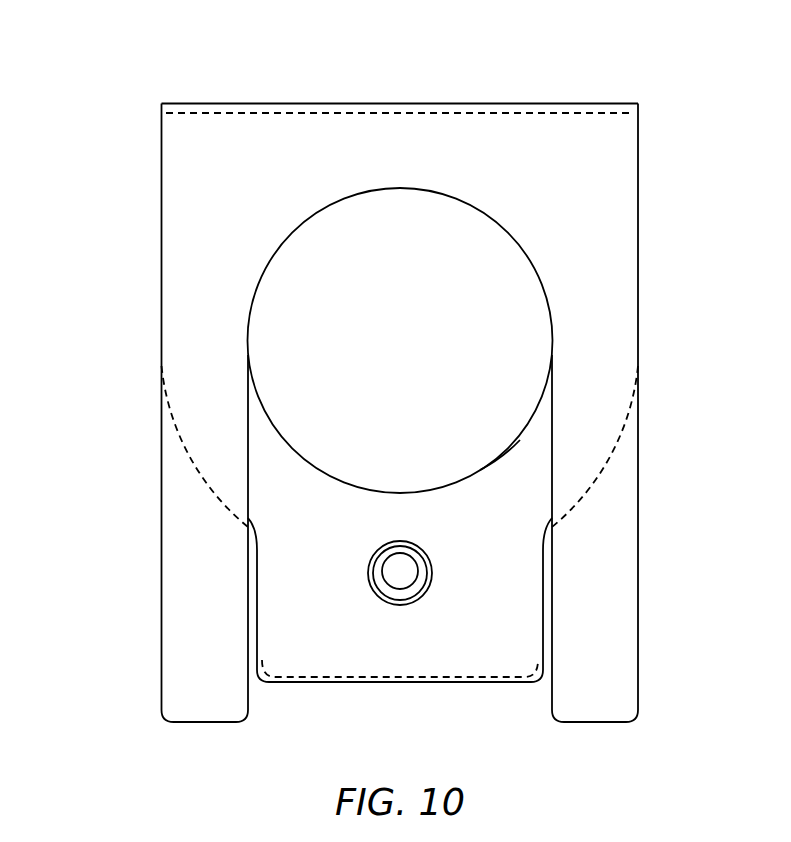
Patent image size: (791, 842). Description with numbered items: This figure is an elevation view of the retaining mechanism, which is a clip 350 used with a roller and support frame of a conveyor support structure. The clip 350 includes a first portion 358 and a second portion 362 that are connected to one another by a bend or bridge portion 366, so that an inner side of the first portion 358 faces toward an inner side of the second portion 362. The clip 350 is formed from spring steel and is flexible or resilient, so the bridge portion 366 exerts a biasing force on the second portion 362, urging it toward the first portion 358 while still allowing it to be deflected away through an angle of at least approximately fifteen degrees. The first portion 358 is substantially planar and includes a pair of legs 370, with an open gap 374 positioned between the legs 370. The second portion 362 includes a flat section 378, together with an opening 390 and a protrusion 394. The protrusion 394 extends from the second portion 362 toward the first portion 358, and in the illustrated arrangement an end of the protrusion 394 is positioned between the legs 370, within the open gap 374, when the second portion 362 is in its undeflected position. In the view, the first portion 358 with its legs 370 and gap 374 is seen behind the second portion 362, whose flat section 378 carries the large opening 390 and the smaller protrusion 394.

The clip 350 is at (133, 80).
The first portion 358 is at (606, 213).
The bridge portion 366 is at (553, 103).
The legs 370 is at (197, 707).
The second portion 362 is at (302, 538).
The open gap 374 is at (551, 410).
The flat section 378 is at (268, 448).
The opening 390 is at (500, 450).
The protrusion 394 is at (400, 578).